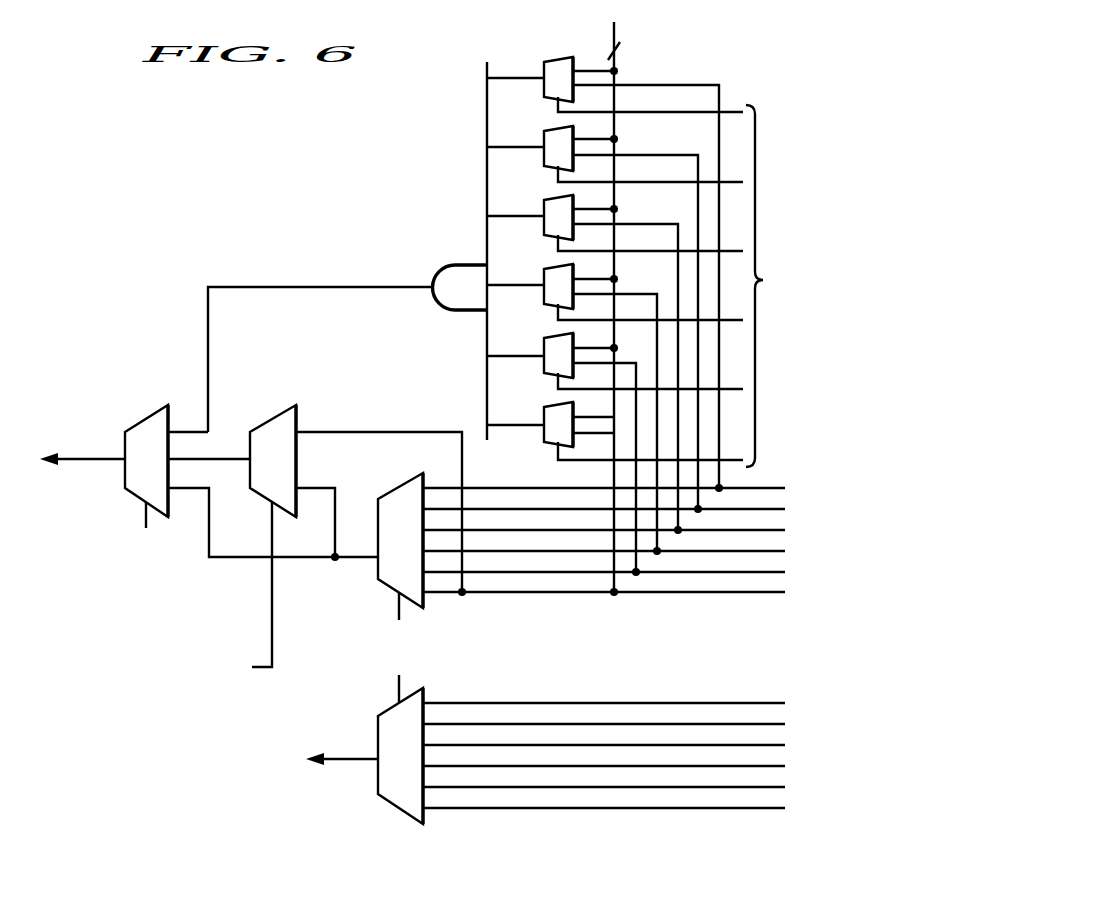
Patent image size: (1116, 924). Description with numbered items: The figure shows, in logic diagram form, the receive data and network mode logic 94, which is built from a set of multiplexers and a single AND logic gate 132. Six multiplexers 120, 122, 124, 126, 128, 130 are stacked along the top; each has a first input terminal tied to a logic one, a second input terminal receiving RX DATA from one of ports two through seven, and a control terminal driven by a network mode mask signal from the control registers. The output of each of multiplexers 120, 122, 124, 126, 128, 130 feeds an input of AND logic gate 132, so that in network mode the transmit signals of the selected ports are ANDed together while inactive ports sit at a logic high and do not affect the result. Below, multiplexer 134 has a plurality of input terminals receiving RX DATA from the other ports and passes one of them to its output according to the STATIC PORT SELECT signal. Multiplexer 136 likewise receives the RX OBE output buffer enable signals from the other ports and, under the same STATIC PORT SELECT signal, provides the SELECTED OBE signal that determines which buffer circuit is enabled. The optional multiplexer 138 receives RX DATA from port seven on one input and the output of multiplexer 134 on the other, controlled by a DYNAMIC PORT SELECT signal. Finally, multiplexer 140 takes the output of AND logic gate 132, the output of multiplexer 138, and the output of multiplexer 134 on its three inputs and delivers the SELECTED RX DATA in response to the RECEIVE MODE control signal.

The receive data and network mode logic 94 is at (250, 112).
The multiplexer 120 is at (552, 96).
The multiplexer 122 is at (552, 165).
The multiplexer 124 is at (552, 234).
The multiplexer 126 is at (552, 303).
The multiplexer 128 is at (552, 372).
The multiplexer 130 is at (552, 441).
The AND logic gate 132 is at (452, 262).
The multiplexer 134 is at (408, 479).
The multiplexer 136 is at (392, 806).
The multiplexer 138 is at (288, 410).
The multiplexer 140 is at (153, 406).